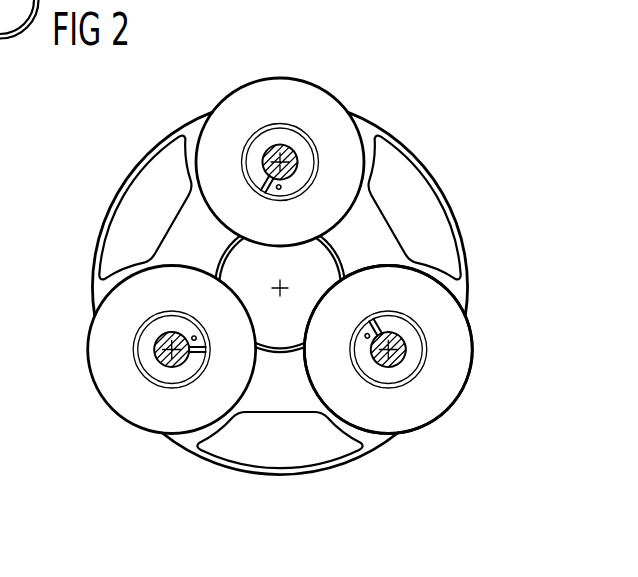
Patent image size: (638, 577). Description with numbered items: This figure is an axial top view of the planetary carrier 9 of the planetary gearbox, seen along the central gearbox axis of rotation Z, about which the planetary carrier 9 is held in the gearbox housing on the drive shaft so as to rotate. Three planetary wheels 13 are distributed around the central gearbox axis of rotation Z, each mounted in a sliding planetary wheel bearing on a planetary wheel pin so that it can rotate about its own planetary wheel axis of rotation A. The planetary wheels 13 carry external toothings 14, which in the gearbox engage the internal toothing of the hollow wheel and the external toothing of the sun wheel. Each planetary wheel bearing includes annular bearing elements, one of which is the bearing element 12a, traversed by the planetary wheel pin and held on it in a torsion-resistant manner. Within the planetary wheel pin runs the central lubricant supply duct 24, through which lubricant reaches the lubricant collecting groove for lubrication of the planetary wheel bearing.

The planetary carrier 9 is at (365, 237).
The planetary wheel 13 is at (433, 398).
The external toothing 14 is at (435, 425).
The annular bearing element 12a is at (412, 355).
The central lubricant supply duct 24 is at (390, 367).
The planetary wheel axis of rotation A is at (293, 150).
The central gearbox axis of rotation Z is at (284, 291).